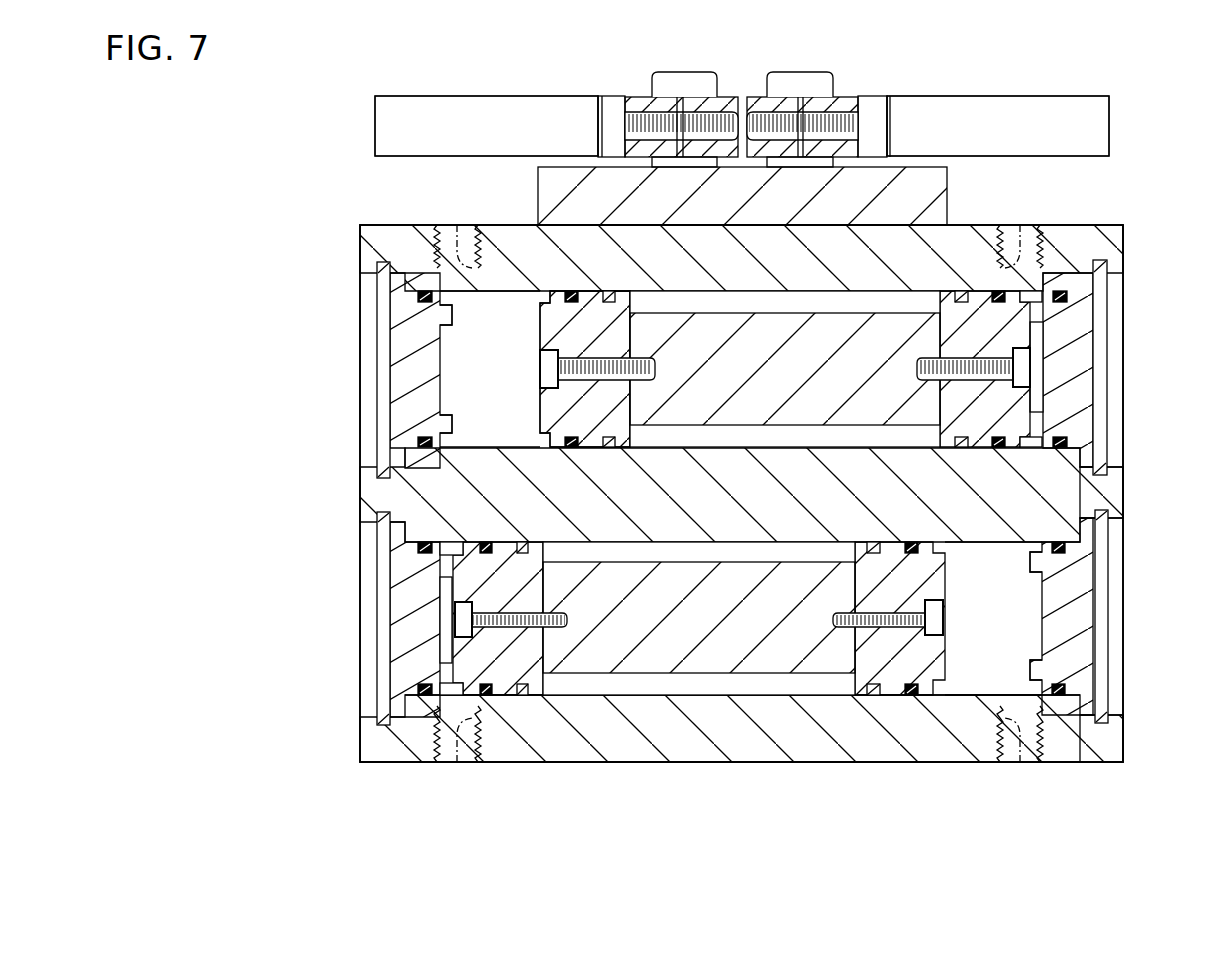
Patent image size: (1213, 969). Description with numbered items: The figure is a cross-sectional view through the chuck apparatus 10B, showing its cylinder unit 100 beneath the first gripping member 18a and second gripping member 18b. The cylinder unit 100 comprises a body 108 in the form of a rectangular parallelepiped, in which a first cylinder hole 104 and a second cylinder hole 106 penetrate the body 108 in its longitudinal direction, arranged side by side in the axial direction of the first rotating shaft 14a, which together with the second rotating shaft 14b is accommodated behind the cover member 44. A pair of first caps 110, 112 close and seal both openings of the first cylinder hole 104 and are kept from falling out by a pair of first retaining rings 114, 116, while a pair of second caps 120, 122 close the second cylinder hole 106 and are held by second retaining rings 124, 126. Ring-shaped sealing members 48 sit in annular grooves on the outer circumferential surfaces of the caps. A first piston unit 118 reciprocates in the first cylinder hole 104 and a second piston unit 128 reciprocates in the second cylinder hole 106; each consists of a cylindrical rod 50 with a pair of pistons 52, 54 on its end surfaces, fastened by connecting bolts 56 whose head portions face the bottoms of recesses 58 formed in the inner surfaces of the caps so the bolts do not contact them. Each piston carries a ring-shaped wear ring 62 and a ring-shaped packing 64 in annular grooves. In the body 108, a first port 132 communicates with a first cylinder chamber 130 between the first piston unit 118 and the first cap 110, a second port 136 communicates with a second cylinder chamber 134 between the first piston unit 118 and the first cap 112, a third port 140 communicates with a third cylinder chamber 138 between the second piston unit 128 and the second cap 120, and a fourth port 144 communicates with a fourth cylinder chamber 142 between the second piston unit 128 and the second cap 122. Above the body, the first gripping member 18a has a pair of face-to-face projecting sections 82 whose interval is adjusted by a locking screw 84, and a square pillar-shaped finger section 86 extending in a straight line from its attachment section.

The chuck apparatus 10B is at (240, 124).
The first rotating shaft 14a is at (682, 87).
The second rotating shaft 14b is at (805, 87).
The first gripping member 18a is at (457, 88).
The second gripping member 18b is at (1025, 88).
The cover member 44 is at (565, 185).
The sealing member 48 is at (425, 450).
The rod 50 is at (803, 330).
The piston 52 is at (942, 300).
The piston 54 is at (563, 415).
The connecting bolt 56 is at (548, 370).
The recess 58 is at (437, 382).
The wear ring 62 is at (608, 292).
The packing 64 is at (570, 294).
The projecting section 82 is at (733, 110).
The locking screw 84 is at (610, 118).
The finger section 86 is at (513, 117).
The cylinder unit 100 is at (1118, 213).
The first cylinder hole 104 is at (1110, 455).
The second cylinder hole 106 is at (1115, 690).
The body 108 is at (680, 742).
The first cap 110 is at (405, 340).
The first cap 112 is at (1075, 340).
The first retaining ring 114 is at (376, 289).
The first retaining ring 116 is at (1108, 289).
The first piston unit 118 is at (534, 329).
The second cap 120 is at (405, 585).
The second cap 122 is at (1075, 650).
The second retaining ring 124 is at (380, 538).
The second retaining ring 126 is at (1108, 538).
The second piston unit 128 is at (953, 649).
The first cylinder chamber 130 is at (485, 425).
The first port 132 is at (455, 248).
The second cylinder chamber 134 is at (1030, 450).
The second port 136 is at (1017, 248).
The third cylinder chamber 138 is at (452, 545).
The third port 140 is at (455, 748).
The fourth cylinder chamber 142 is at (965, 685).
The fourth port 144 is at (1012, 748).